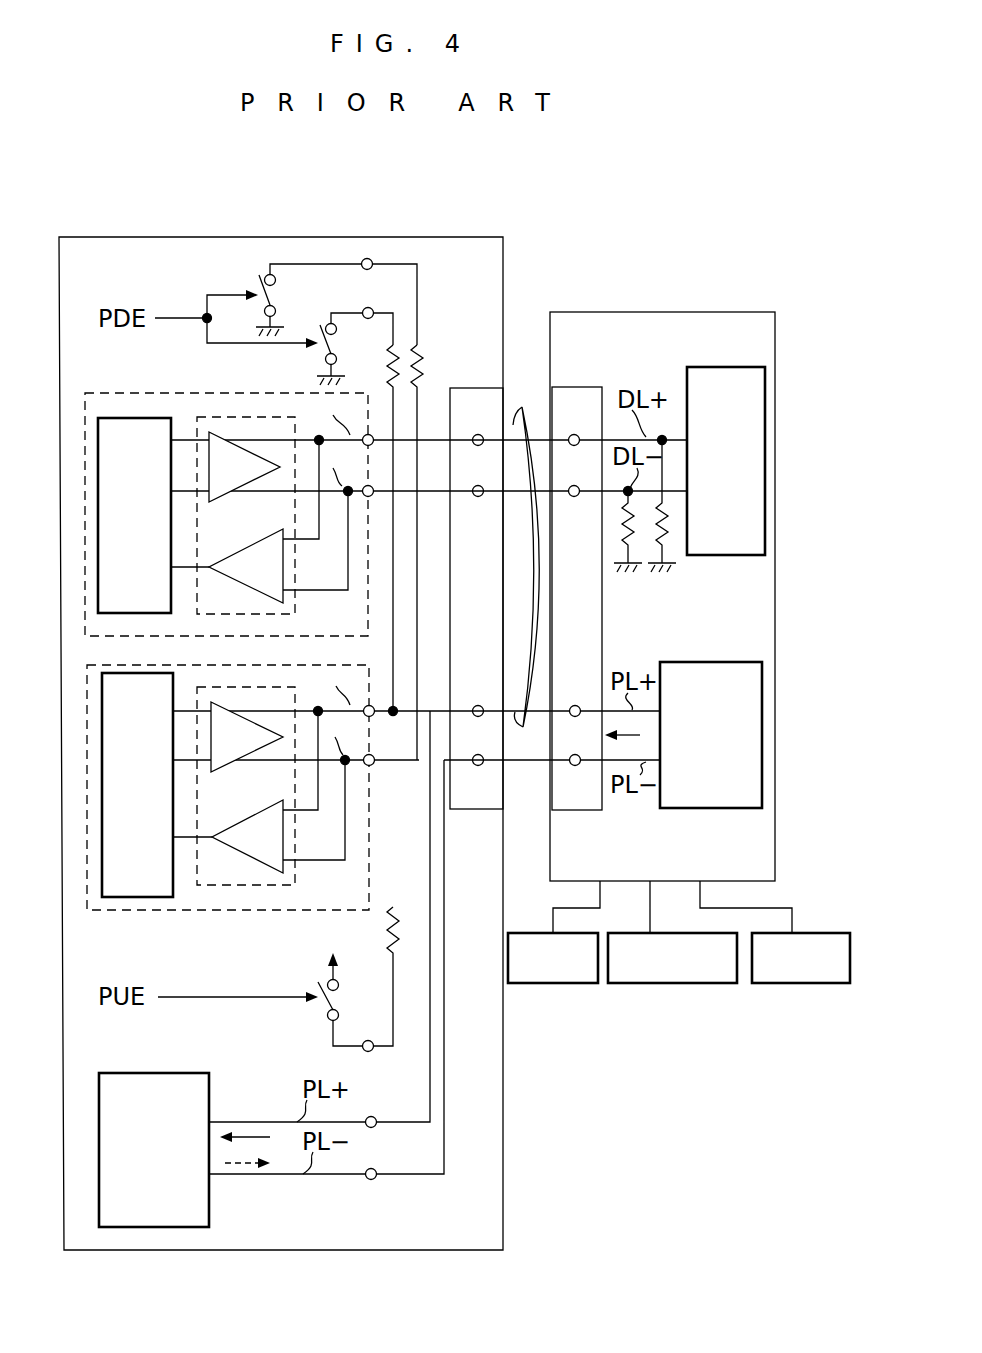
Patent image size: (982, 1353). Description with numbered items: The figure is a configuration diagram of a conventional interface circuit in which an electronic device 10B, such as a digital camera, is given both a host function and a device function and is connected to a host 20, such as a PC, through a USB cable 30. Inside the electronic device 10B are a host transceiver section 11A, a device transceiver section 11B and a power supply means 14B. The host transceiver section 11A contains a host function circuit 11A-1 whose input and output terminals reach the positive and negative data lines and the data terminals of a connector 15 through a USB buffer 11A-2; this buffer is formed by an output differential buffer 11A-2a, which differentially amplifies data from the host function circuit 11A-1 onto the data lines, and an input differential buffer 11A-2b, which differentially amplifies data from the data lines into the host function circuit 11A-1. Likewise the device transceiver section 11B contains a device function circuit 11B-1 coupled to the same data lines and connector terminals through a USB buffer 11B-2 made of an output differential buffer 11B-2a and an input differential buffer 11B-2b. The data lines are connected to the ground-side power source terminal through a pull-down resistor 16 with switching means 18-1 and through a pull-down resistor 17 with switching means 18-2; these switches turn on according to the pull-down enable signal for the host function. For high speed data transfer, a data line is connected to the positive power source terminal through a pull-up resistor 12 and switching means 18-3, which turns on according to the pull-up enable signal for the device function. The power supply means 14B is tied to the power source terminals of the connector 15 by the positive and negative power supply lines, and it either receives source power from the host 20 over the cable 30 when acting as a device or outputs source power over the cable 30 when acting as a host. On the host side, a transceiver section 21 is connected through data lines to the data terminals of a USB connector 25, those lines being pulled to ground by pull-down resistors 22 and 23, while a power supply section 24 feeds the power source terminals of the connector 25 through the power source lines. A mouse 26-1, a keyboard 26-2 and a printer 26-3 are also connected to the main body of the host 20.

The electronic device 10B is at (296, 212).
The switching means 18-1 is at (322, 354).
The switching means 18-2 is at (275, 292).
The switching means 18-3 is at (316, 1003).
The pull-down resistor 16 is at (385, 366).
The pull-down resistor 17 is at (420, 348).
The connector 15 is at (472, 388).
The host transceiver section 11A is at (382, 490).
The host function circuit 11A-1 is at (138, 418).
The USB buffer 11A-2 is at (205, 527).
The output differential buffer 11A-2a is at (258, 477).
The input differential buffer 11A-2b is at (222, 572).
The device transceiver section 11B is at (373, 807).
The device function circuit 11B-1 is at (140, 898).
The USB buffer 11B-2 is at (284, 797).
The output differential buffer 11B-2a is at (258, 748).
The input differential buffer 11B-2b is at (215, 842).
The pull-up resistor 12 is at (386, 953).
The power supply means 14B is at (143, 1073).
The USB cable 30 is at (522, 407).
The host 20 is at (670, 312).
The USB connector 25 is at (580, 387).
The transceiver section 21 is at (716, 557).
The pull-down resistor 22 is at (677, 540).
The pull-down resistor 23 is at (643, 543).
The power supply section 24 is at (713, 808).
The mouse 26-1 is at (560, 984).
The keyboard 26-2 is at (658, 984).
The printer 26-3 is at (773, 984).